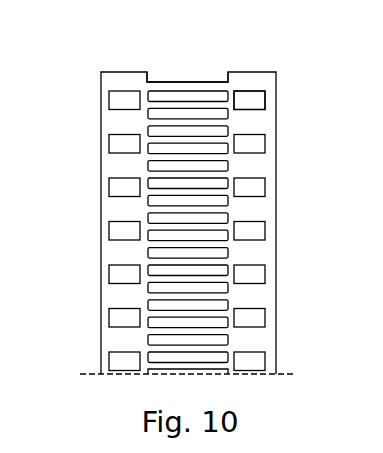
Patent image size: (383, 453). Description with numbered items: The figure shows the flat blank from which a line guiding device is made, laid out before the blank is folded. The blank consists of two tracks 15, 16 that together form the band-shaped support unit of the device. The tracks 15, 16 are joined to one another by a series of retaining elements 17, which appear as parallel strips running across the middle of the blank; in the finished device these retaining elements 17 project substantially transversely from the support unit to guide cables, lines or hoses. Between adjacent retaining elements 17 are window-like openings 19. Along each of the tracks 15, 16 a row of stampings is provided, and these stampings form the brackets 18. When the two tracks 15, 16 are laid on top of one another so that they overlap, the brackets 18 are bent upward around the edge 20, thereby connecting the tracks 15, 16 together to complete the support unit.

The track 15 is at (252, 72).
The track 16 is at (118, 72).
The retaining elements 17 is at (152, 89).
The brackets 18 is at (120, 182).
The window-like openings 19 is at (180, 112).
The edge 20 is at (256, 90).